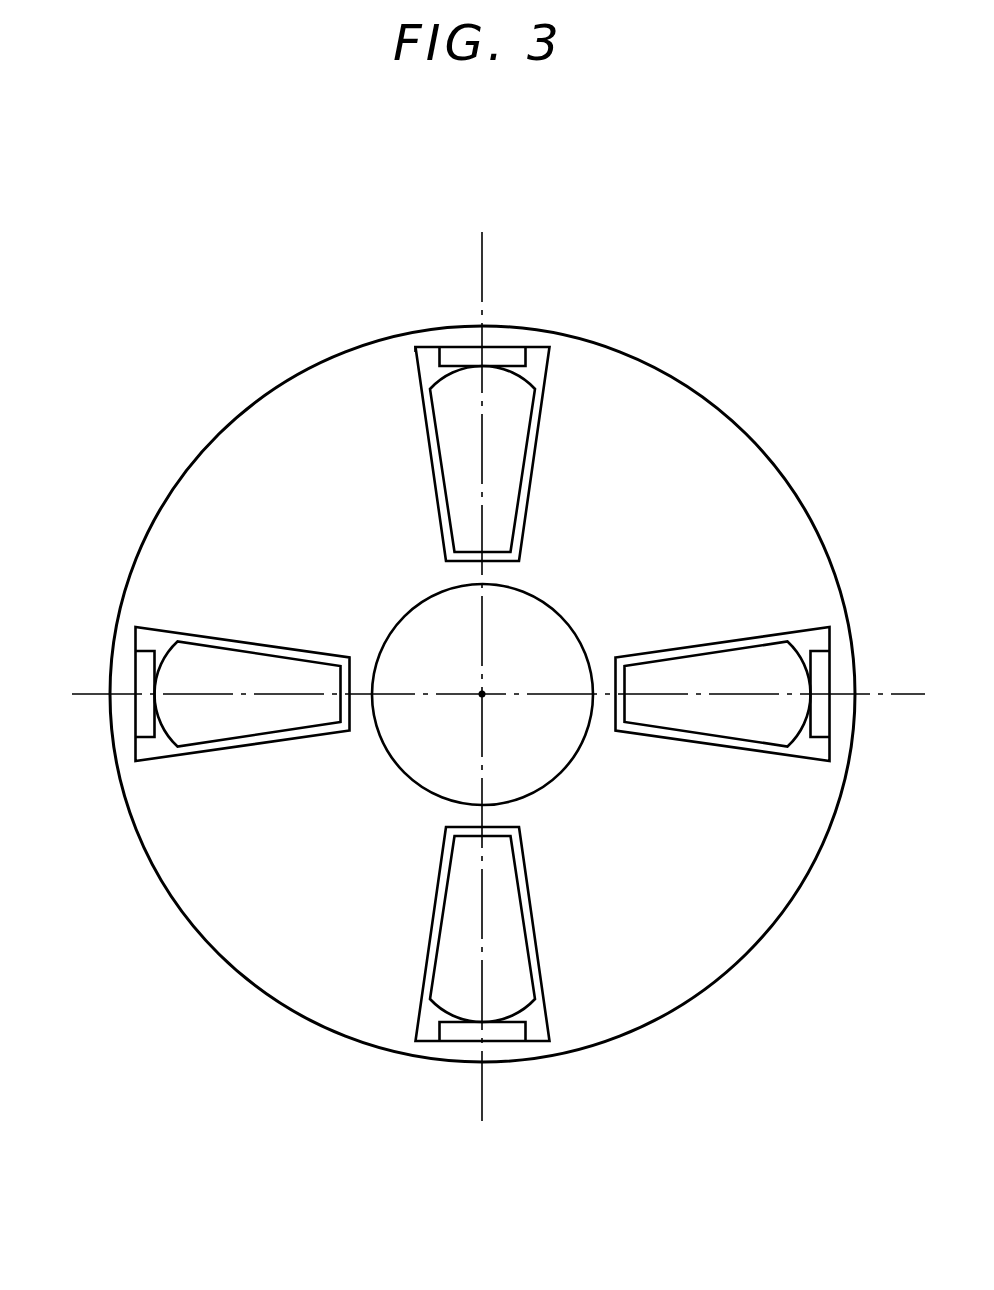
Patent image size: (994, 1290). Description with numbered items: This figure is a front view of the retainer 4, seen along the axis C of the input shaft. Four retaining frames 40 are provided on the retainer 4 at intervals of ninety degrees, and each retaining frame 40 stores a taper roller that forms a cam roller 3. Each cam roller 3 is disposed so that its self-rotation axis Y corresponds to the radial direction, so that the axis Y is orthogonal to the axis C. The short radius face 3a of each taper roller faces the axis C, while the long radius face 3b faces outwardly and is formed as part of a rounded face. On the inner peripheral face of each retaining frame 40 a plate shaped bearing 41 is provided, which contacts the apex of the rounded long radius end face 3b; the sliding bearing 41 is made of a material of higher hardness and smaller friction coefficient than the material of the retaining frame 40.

The cam roller 3 is at (483, 727).
The short radius face 3a is at (513, 828).
The long radius face 3b is at (503, 935).
The retainer 4 is at (202, 455).
The retaining frame 40 is at (420, 360).
The plate shaped bearing 41 is at (512, 353).
The axis of the input shaft C is at (482, 694).
The self-rotation axis Y is at (480, 670).